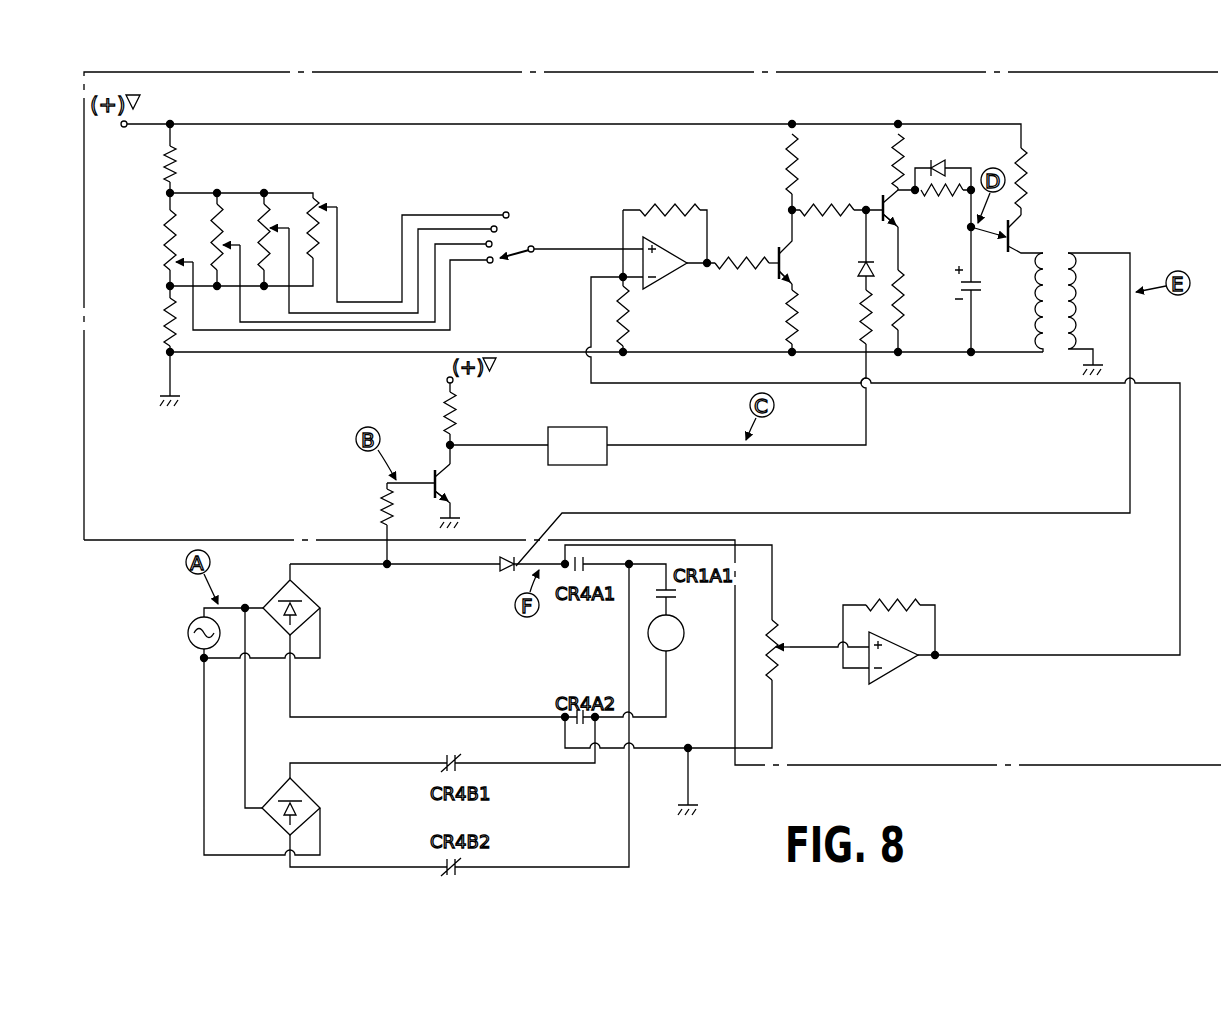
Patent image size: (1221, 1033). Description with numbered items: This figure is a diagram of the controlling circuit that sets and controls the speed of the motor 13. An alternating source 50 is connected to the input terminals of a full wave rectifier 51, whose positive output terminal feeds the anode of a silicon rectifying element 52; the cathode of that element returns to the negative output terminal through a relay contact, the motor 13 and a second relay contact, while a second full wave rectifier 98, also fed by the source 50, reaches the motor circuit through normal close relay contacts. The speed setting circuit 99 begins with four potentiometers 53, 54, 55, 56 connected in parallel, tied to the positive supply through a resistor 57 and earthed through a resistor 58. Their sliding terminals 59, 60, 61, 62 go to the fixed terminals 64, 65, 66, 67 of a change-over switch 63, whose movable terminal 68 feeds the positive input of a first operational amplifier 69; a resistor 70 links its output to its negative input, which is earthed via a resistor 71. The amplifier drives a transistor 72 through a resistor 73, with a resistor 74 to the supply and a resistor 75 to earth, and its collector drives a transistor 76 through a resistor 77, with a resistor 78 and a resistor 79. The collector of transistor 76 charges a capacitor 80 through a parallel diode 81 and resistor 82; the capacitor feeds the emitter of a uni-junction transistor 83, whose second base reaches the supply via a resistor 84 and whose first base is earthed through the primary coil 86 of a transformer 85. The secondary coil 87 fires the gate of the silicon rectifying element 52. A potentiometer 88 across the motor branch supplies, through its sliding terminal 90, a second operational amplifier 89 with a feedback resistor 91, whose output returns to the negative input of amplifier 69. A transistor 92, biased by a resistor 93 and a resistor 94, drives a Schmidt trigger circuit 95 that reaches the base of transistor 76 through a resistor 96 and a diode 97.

The motor 13 is at (684, 641).
The alternating source 50 is at (187, 633).
The full wave rectifier 51 is at (312, 598).
The silicon rectifying element 52 is at (509, 554).
The potentiometer 53 is at (163, 225).
The potentiometer 54 is at (222, 205).
The potentiometer 55 is at (270, 205).
The potentiometer 56 is at (320, 197).
The resistor 57 is at (165, 162).
The resistor 58 is at (165, 319).
The sliding terminal 59 is at (184, 258).
The sliding terminal 60 is at (236, 243).
The sliding terminal 61 is at (283, 228).
The sliding terminal 62 is at (326, 208).
The change-over switch 63 is at (506, 280).
The fixed terminal 64 is at (489, 263).
The fixed terminal 65 is at (492, 243).
The fixed terminal 66 is at (497, 227).
The fixed terminal 67 is at (504, 212).
The movable terminal 68 is at (532, 252).
The first operational amplifier 69 is at (670, 275).
The resistor 70 is at (670, 206).
The resistor 71 is at (630, 320).
The transistor 72 is at (775, 280).
The resistor 73 is at (744, 258).
The resistor 74 is at (787, 165).
The resistor 75 is at (800, 314).
The transistor 76 is at (882, 188).
The resistor 77 is at (825, 206).
The resistor 78 is at (906, 150).
The resistor 79 is at (905, 315).
The capacitor 80 is at (980, 288).
The diode 81 is at (942, 162).
The resistor 82 is at (942, 196).
The uni-junction transistor 83 is at (1025, 228).
The resistor 84 is at (1028, 150).
The transformer 85 is at (1088, 268).
The primary coil 86 is at (1048, 258).
The secondary coil 87 is at (1070, 253).
The potentiometer 88 is at (782, 670).
The second operational amplifier 89 is at (896, 668).
The sliding terminal 90 is at (814, 644).
The resistor 91 is at (894, 599).
The transistor 92 is at (425, 458).
The resistor 93 is at (380, 510).
The resistor 94 is at (458, 409).
The Schmidt trigger circuit 95 is at (590, 427).
The resistor 96 is at (862, 323).
The diode 97 is at (857, 268).
The full wave rectifier 98 is at (312, 796).
The speed setting circuit 99 is at (1085, 768).